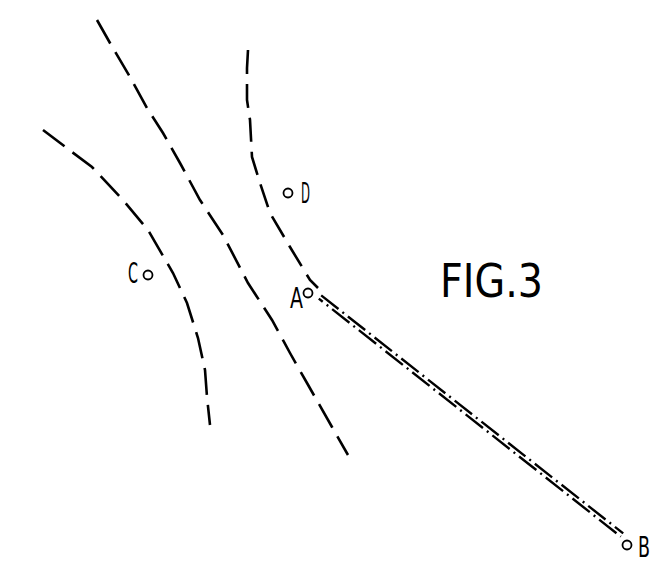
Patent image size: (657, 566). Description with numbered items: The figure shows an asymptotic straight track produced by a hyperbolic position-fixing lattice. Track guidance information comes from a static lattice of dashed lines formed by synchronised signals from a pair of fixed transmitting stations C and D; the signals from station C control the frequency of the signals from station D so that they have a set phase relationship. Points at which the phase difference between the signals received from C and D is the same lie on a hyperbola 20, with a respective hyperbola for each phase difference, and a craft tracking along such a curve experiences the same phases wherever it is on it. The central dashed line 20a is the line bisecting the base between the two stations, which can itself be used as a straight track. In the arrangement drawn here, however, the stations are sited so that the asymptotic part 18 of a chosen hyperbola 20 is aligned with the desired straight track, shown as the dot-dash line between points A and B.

The central dashed line 20a is at (222, 237).
The hyperbola 20 is at (182, 237).
The asymptotic part 18 is at (468, 412).